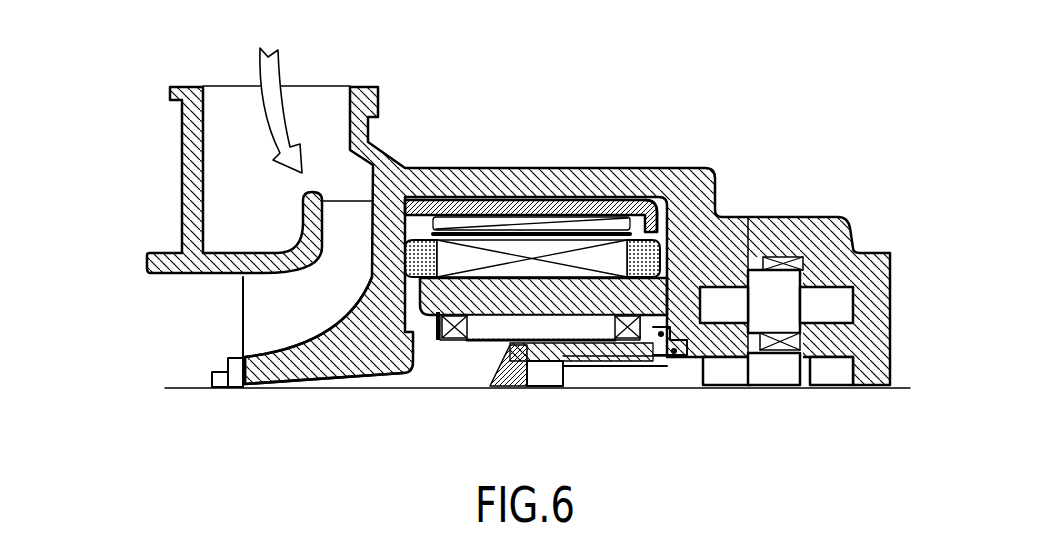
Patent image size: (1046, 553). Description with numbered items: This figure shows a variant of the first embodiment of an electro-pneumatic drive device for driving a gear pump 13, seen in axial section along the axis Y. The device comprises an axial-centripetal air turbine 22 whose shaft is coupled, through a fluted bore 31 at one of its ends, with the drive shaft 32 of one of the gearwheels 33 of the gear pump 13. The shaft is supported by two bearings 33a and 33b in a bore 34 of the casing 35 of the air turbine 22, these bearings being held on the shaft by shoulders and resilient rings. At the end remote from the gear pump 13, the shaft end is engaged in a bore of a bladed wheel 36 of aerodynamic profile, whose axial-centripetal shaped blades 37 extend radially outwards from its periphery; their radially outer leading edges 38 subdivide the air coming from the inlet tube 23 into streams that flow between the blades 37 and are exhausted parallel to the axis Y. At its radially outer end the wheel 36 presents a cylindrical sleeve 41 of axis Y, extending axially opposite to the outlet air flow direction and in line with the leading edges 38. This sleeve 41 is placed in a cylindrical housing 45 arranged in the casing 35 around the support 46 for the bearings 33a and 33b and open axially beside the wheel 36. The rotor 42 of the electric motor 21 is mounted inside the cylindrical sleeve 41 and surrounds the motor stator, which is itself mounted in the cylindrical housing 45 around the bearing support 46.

The gear pump 13 is at (777, 267).
The electric motor 21 is at (482, 240).
The air turbine 22 is at (129, 218).
The inlet tube 23 is at (308, 103).
The fluted bore 31 is at (538, 375).
The drive shaft 32 is at (717, 372).
The gearwheel 33 is at (772, 370).
The bearing 33a is at (455, 337).
The bearing 33b is at (622, 343).
The bore 34 is at (577, 333).
The casing 35 is at (685, 195).
The wheel 36 is at (343, 360).
The blades 37 is at (260, 310).
The leading edges 38 is at (340, 193).
The cylindrical sleeve 41 is at (535, 205).
The rotor 42 is at (493, 223).
The cylindrical housing 45 is at (655, 217).
The support 46 is at (497, 298).
The axis Y is at (177, 387).